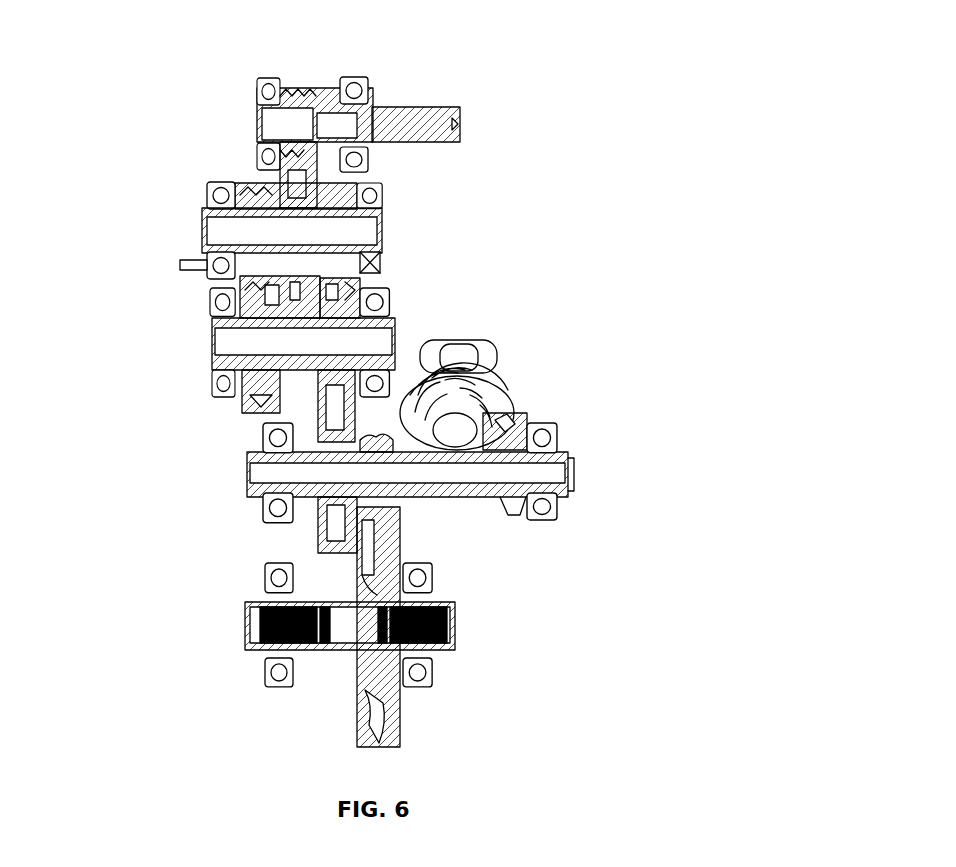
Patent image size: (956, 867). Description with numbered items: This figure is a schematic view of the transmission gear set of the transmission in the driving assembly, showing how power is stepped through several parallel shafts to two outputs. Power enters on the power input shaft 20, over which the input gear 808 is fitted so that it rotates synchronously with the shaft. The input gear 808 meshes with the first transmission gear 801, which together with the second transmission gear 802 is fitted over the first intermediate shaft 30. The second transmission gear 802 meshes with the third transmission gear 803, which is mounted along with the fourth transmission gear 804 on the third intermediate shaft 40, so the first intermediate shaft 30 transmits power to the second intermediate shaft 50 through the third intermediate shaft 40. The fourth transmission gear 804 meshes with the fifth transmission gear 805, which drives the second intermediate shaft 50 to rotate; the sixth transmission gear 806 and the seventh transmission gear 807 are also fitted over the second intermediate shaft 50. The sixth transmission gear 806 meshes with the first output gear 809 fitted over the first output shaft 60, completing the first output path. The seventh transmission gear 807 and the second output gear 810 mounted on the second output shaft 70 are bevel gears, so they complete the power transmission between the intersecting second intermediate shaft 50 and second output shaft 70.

The input gear 808 is at (299, 95).
The power input shaft 20 is at (447, 125).
The first transmission gear 801 is at (303, 195).
The second transmission gear 802 is at (247, 200).
The first intermediate shaft 30 is at (230, 230).
The third transmission gear 803 is at (272, 290).
The fourth transmission gear 804 is at (347, 293).
The third intermediate shaft 40 is at (370, 347).
The fifth transmission gear 805 is at (330, 418).
The second output shaft 70 is at (468, 357).
The second output gear 810 is at (477, 400).
The seventh transmission gear 807 is at (512, 433).
The second intermediate shaft 50 is at (548, 475).
The sixth transmission gear 806 is at (390, 445).
The first output shaft 60 is at (272, 648).
The first output gear 809 is at (378, 687).